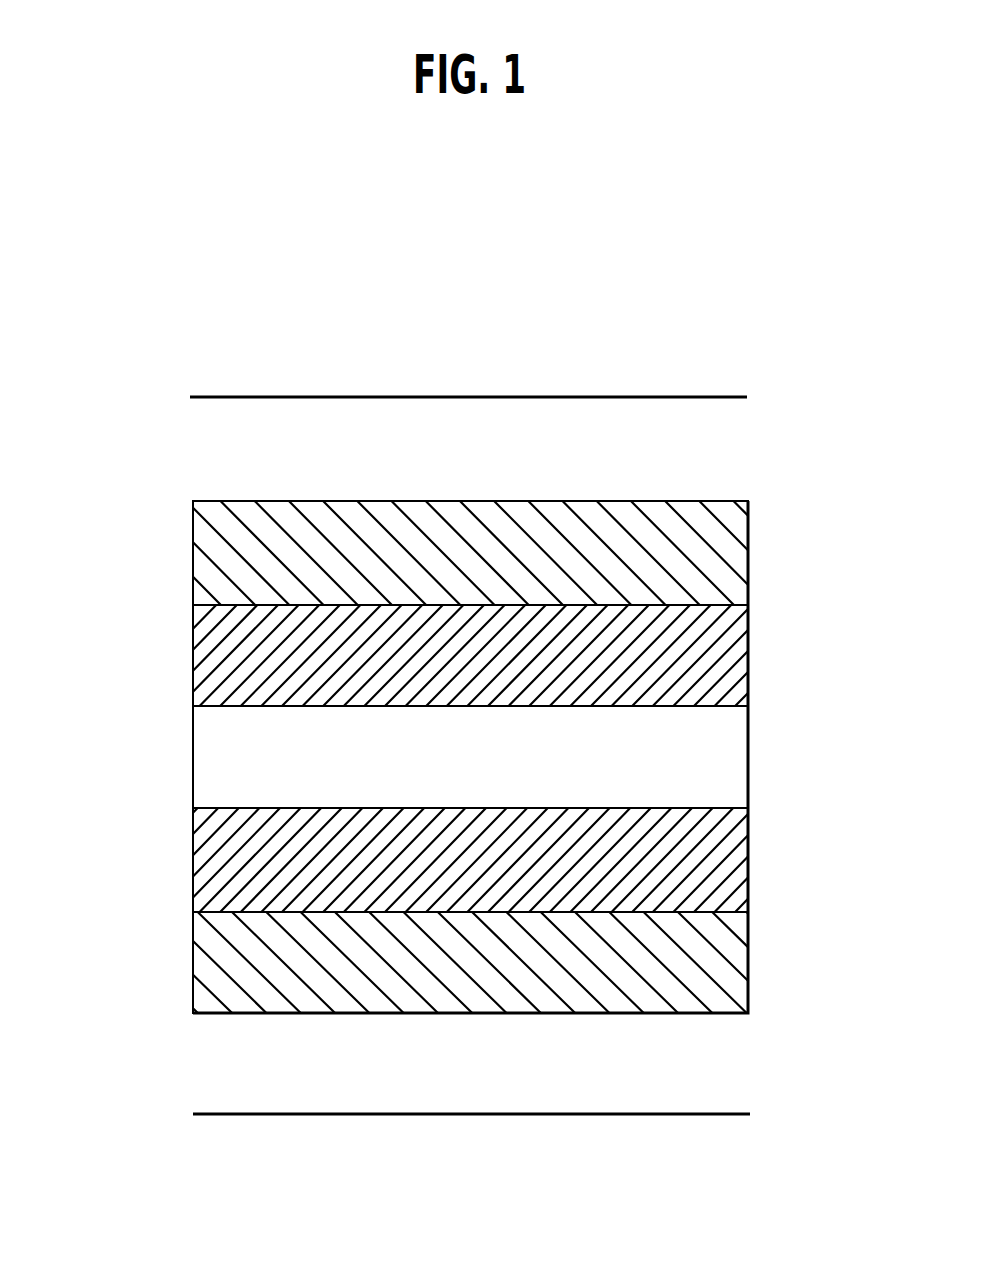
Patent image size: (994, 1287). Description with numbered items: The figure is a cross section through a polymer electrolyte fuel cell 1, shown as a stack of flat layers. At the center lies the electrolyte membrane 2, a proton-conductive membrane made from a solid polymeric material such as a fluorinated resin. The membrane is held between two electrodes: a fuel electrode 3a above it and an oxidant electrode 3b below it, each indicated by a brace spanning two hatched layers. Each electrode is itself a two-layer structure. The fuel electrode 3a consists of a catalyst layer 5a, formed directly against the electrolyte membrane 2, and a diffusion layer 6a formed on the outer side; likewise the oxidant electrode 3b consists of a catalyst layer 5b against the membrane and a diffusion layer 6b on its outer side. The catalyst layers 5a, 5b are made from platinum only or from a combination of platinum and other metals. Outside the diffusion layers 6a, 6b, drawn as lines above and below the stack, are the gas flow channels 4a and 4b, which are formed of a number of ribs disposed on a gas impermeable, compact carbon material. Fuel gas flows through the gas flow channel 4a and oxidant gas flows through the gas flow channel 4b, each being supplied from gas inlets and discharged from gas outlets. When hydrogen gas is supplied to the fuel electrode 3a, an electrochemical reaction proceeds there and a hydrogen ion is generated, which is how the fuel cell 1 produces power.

The fuel cell 1 is at (102, 307).
The electrolyte membrane 2 is at (205, 755).
The fuel electrode 3a is at (785, 500).
The oxidant electrode 3b is at (785, 805).
The gas flow channel 4a is at (713, 462).
The gas flow channel 4b is at (718, 1082).
The catalyst layer 5a is at (205, 647).
The catalyst layer 5b is at (205, 848).
The diffusion layer 6a is at (205, 558).
The diffusion layer 6b is at (205, 958).